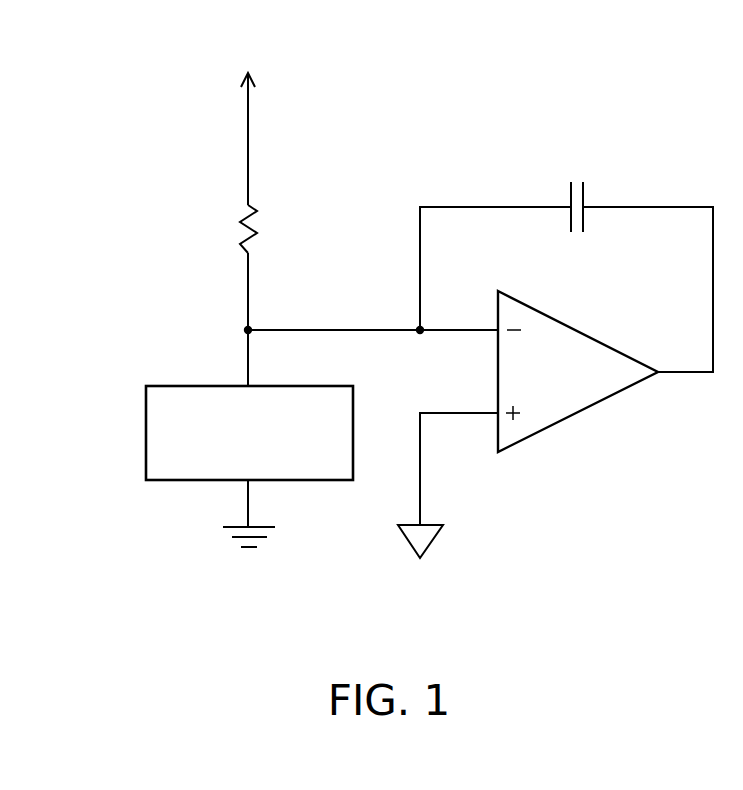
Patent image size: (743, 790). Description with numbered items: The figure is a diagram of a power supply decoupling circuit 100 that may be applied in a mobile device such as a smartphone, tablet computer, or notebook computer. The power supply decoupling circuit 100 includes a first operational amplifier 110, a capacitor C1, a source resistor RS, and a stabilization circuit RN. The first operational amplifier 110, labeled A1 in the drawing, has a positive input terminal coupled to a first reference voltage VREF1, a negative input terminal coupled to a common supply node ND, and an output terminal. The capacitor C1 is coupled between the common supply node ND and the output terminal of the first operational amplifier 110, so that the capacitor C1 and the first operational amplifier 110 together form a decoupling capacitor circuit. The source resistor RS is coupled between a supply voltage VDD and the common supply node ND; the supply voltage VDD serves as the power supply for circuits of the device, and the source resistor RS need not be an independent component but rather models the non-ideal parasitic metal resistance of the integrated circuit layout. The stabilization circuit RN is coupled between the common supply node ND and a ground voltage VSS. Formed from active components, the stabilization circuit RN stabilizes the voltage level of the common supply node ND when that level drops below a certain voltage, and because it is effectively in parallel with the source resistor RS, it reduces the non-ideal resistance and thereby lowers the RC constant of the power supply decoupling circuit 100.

The power supply decoupling circuit 100 is at (73, 94).
The first operational amplifier 110 is at (578, 371).
The amplifier A1 is at (571, 373).
The source resistor RS is at (258, 224).
The stabilization circuit RN is at (146, 433).
The common supply node ND is at (245, 331).
The capacitor C1 is at (575, 180).
The supply voltage VDD is at (251, 122).
The ground voltage VSS is at (249, 534).
The first reference voltage VREF1 is at (436, 507).